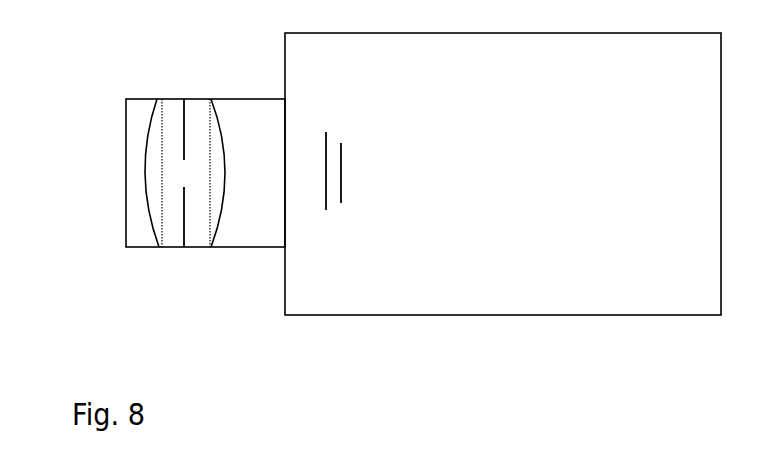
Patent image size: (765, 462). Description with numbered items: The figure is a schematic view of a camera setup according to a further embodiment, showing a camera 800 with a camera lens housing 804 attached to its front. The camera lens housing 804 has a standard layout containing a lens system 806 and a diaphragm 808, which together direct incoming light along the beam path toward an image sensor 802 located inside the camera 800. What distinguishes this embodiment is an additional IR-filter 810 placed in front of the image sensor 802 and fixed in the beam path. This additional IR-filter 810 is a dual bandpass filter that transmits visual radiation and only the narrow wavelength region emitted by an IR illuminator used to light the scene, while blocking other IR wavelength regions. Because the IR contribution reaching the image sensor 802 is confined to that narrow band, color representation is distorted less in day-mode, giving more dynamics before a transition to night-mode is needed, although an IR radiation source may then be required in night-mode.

The camera 800 is at (641, 117).
The image sensor 802 is at (341, 203).
The camera lens housing 804 is at (132, 248).
The lens system 806 is at (212, 95).
The diaphragm 808 is at (183, 248).
The additional IR-filter 810 is at (326, 210).